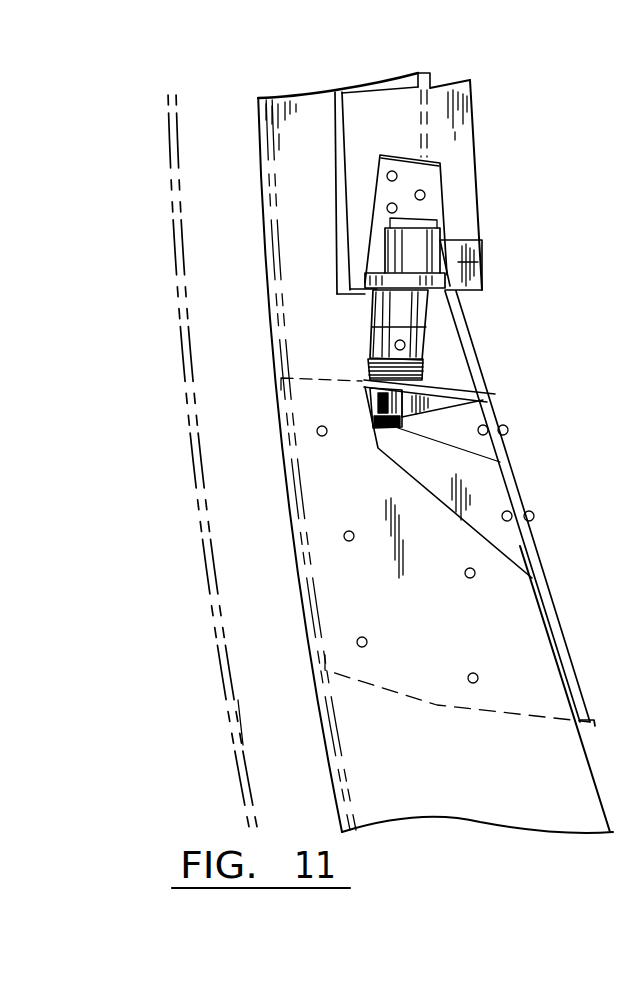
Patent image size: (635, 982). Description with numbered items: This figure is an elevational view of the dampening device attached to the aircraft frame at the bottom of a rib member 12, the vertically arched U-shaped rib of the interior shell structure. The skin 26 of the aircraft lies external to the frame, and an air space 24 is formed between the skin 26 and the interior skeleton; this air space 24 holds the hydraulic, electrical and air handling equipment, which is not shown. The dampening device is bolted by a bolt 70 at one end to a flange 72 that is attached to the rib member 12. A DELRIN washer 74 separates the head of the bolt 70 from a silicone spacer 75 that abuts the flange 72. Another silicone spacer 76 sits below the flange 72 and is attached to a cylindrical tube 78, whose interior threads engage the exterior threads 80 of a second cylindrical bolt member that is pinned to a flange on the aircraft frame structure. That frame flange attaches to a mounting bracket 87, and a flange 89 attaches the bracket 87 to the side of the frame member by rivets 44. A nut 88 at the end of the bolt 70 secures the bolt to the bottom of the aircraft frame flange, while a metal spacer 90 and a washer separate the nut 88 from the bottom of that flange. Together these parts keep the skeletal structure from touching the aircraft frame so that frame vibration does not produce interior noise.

The arched rib member 12 is at (573, 883).
The air space 24 is at (270, 712).
The skin 26 is at (200, 505).
The rivets 44 is at (387, 208).
The bolt 70 is at (420, 219).
The flange 72 is at (438, 164).
The DELRIN washer 74 is at (440, 252).
The silicone spacer 75 is at (445, 265).
The silicone spacer 76 is at (372, 307).
The cylindrical tube 78 is at (392, 344).
The exterior threads 80 is at (425, 373).
The mounting bracket 87 is at (557, 618).
The nut 88 is at (487, 402).
The flange 89 is at (483, 720).
The spacer 90 is at (370, 402).